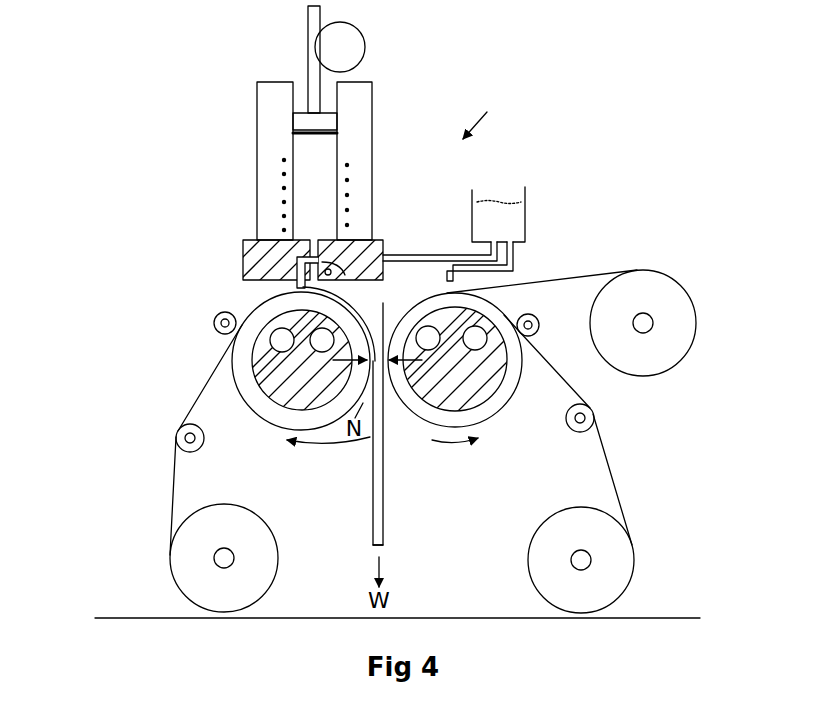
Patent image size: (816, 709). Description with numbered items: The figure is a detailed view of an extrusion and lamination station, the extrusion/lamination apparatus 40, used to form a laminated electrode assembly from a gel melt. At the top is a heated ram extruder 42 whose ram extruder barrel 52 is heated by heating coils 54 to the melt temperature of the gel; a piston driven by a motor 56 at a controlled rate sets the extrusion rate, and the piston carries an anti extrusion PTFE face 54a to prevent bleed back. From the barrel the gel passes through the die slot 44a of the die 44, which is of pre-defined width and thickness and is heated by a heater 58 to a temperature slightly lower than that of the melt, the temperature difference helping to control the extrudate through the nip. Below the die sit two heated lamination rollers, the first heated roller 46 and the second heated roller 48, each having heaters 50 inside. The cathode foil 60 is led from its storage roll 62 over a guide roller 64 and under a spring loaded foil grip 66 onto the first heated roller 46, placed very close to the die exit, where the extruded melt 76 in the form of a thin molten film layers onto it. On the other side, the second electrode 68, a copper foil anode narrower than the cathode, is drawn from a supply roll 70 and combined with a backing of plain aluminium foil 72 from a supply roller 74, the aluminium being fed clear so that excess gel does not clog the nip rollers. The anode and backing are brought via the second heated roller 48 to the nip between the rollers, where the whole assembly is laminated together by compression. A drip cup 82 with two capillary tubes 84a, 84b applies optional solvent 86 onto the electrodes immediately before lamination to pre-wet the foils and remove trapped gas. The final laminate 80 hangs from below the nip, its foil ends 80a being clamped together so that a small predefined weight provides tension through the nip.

The extrusion/lamination apparatus 40 is at (486, 112).
The heated ram extruder 42 is at (272, 133).
The die 44 is at (262, 257).
The die slot 44a is at (367, 262).
The first heated roller 46 is at (280, 380).
The second heated roller 48 is at (482, 385).
The heaters 50 is at (322, 342).
The ram extruder barrel 52 is at (323, 153).
The heating coils 54 is at (331, 118).
The anti extrusion PTFE face 54a is at (339, 133).
The motor 56 is at (353, 47).
The heater 58 is at (287, 273).
The cathode foil 60 is at (172, 497).
The storage roll 62 is at (185, 562).
The guide roller 64 is at (182, 428).
The spring loaded foil grip 66 is at (216, 314).
The second electrode 68 is at (420, 300).
The supply roll 70 is at (675, 297).
The aluminium foil 72 is at (613, 482).
The supply roller 74 is at (617, 560).
The extruded melt 76 is at (352, 310).
The final laminate 80 is at (380, 488).
The foil ends 80a is at (372, 545).
The drip cup 82 is at (525, 210).
The capillary tube 84a is at (437, 256).
The capillary tube 84b is at (514, 252).
The solvent 86 is at (507, 223).